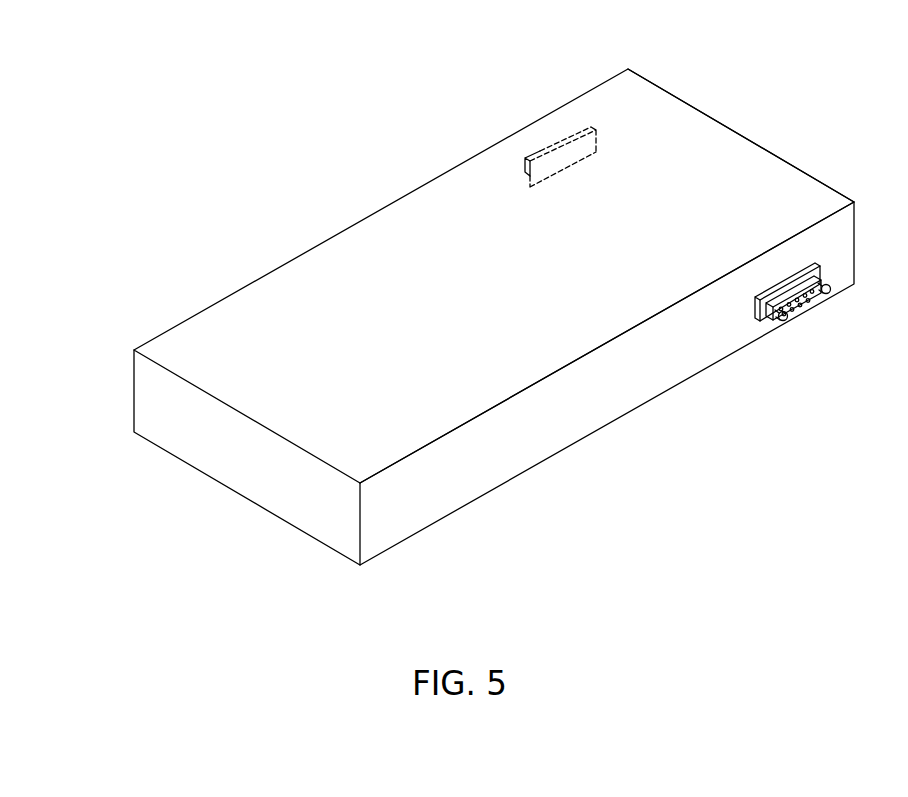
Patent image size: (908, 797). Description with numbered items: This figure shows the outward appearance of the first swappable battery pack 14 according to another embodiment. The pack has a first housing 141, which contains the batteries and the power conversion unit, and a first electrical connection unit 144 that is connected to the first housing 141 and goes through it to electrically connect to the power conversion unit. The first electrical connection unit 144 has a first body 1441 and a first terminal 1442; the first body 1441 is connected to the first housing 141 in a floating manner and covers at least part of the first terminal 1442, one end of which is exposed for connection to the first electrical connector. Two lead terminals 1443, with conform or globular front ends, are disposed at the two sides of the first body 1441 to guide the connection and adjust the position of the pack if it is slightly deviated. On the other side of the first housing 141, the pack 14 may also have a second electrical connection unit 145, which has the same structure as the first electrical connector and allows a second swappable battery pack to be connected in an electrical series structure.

The first swappable battery pack 14 is at (717, 74).
The first housing 141 is at (780, 173).
The first electrical connection unit 144 is at (830, 304).
The first body 1441 is at (824, 275).
The first terminal 1442 is at (811, 299).
The lead terminal 1443 is at (783, 321).
The second electrical connection unit 145 is at (590, 124).